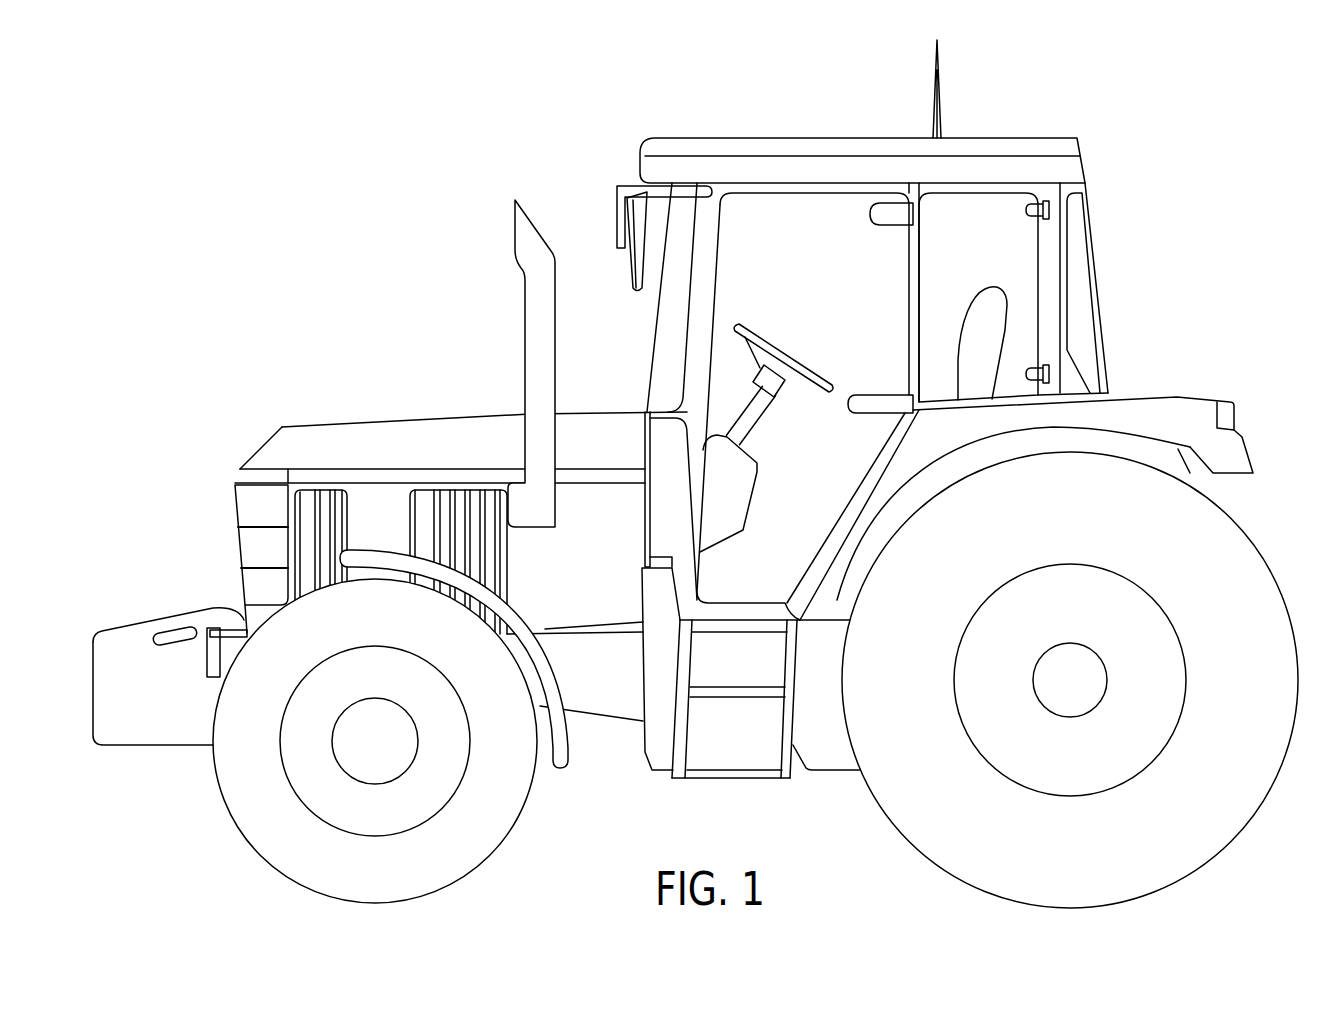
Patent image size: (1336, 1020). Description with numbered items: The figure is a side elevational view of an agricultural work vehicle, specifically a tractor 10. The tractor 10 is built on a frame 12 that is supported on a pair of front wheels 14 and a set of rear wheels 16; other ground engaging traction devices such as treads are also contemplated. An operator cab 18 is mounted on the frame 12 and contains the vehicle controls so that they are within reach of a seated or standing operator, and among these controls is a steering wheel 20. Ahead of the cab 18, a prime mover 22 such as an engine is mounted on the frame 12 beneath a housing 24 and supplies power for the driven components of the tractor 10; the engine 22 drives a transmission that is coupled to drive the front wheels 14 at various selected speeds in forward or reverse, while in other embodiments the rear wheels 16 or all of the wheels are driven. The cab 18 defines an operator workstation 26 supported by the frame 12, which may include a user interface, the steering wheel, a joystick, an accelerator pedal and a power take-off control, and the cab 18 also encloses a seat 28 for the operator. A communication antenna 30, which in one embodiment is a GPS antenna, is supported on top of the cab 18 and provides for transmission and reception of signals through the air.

The tractor 10 is at (703, 474).
The frame 12 is at (587, 700).
The front wheels 14 is at (495, 825).
The rear wheels 16 is at (1237, 795).
The operator cab 18 is at (935, 330).
The steering wheel 20 is at (748, 330).
The prime mover 22 is at (427, 497).
The housing 24 is at (293, 394).
The operator workstation 26 is at (745, 507).
The seat 28 is at (988, 298).
The communication antenna 30 is at (938, 122).